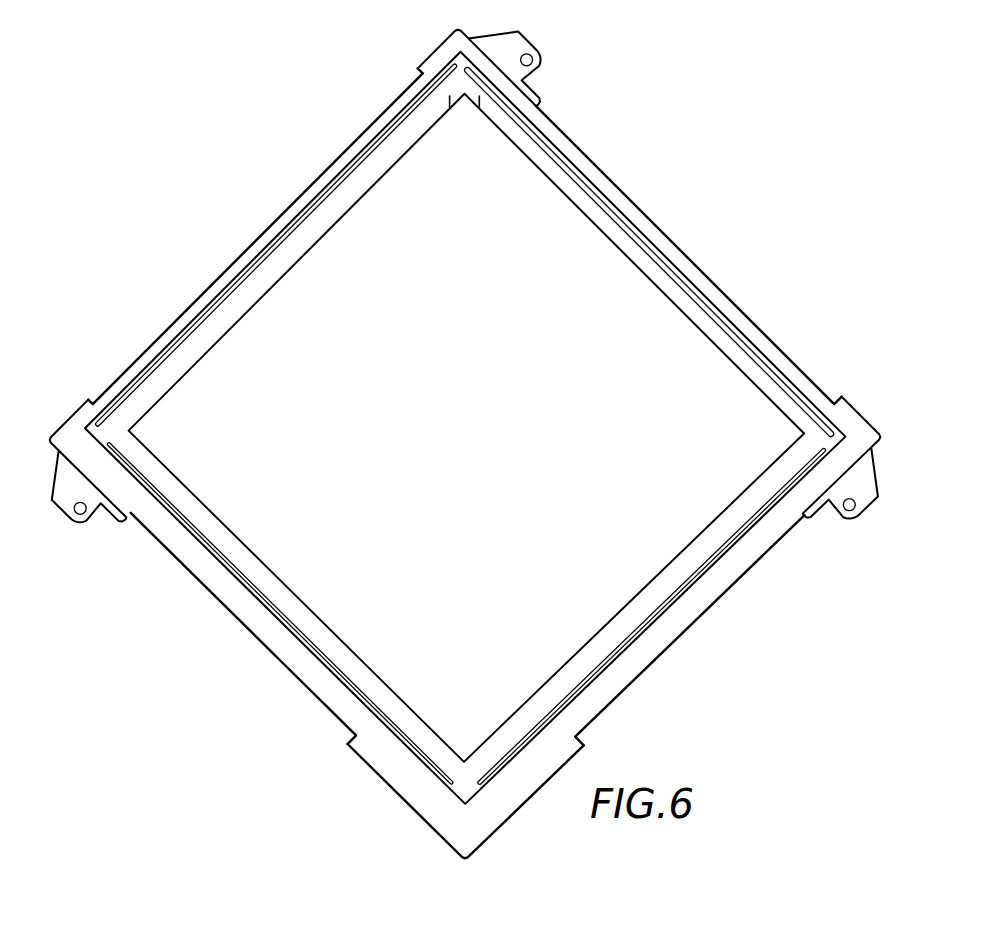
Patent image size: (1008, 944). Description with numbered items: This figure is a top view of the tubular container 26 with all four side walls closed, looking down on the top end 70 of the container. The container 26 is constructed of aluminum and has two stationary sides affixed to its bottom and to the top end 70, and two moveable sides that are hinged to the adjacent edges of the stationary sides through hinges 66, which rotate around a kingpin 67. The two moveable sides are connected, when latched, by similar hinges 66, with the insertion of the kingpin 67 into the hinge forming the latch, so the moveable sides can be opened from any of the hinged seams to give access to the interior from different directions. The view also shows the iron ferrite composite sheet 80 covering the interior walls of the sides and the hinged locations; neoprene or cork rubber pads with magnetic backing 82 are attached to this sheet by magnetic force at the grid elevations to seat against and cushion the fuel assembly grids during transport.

The tubular container 26 is at (657, 184).
The hinges 66 is at (495, 40).
The kingpin 67 is at (527, 60).
The top end 70 is at (660, 318).
The iron ferrite composite sheet 80 is at (708, 566).
The neoprene or cork rubber pads with magnetic backing 82 is at (766, 358).